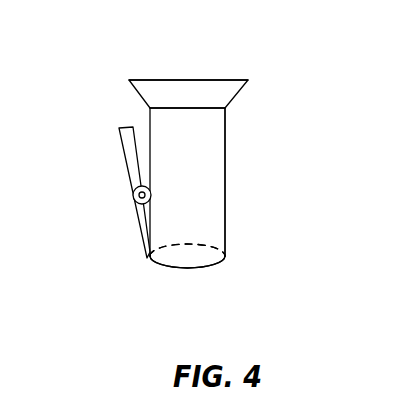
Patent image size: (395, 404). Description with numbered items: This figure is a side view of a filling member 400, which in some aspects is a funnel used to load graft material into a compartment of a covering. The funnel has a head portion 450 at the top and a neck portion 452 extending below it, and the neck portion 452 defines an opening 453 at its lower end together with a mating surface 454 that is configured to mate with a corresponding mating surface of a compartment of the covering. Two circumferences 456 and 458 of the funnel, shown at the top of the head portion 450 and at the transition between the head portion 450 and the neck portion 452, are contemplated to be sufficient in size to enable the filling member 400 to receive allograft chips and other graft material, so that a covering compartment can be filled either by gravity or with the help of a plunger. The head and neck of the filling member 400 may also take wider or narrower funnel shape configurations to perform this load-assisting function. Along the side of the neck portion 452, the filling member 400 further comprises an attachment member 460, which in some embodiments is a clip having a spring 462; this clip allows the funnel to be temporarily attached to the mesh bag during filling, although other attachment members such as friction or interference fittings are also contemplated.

The filling member 400 is at (283, 167).
The head portion 450 is at (201, 63).
The neck portion 452 is at (220, 218).
The opening 453 is at (201, 261).
The mating surface 454 is at (160, 269).
The circumference 456 is at (248, 80).
The circumference 458 is at (225, 108).
The attachment member 460 is at (125, 162).
The spring 462 is at (135, 208).